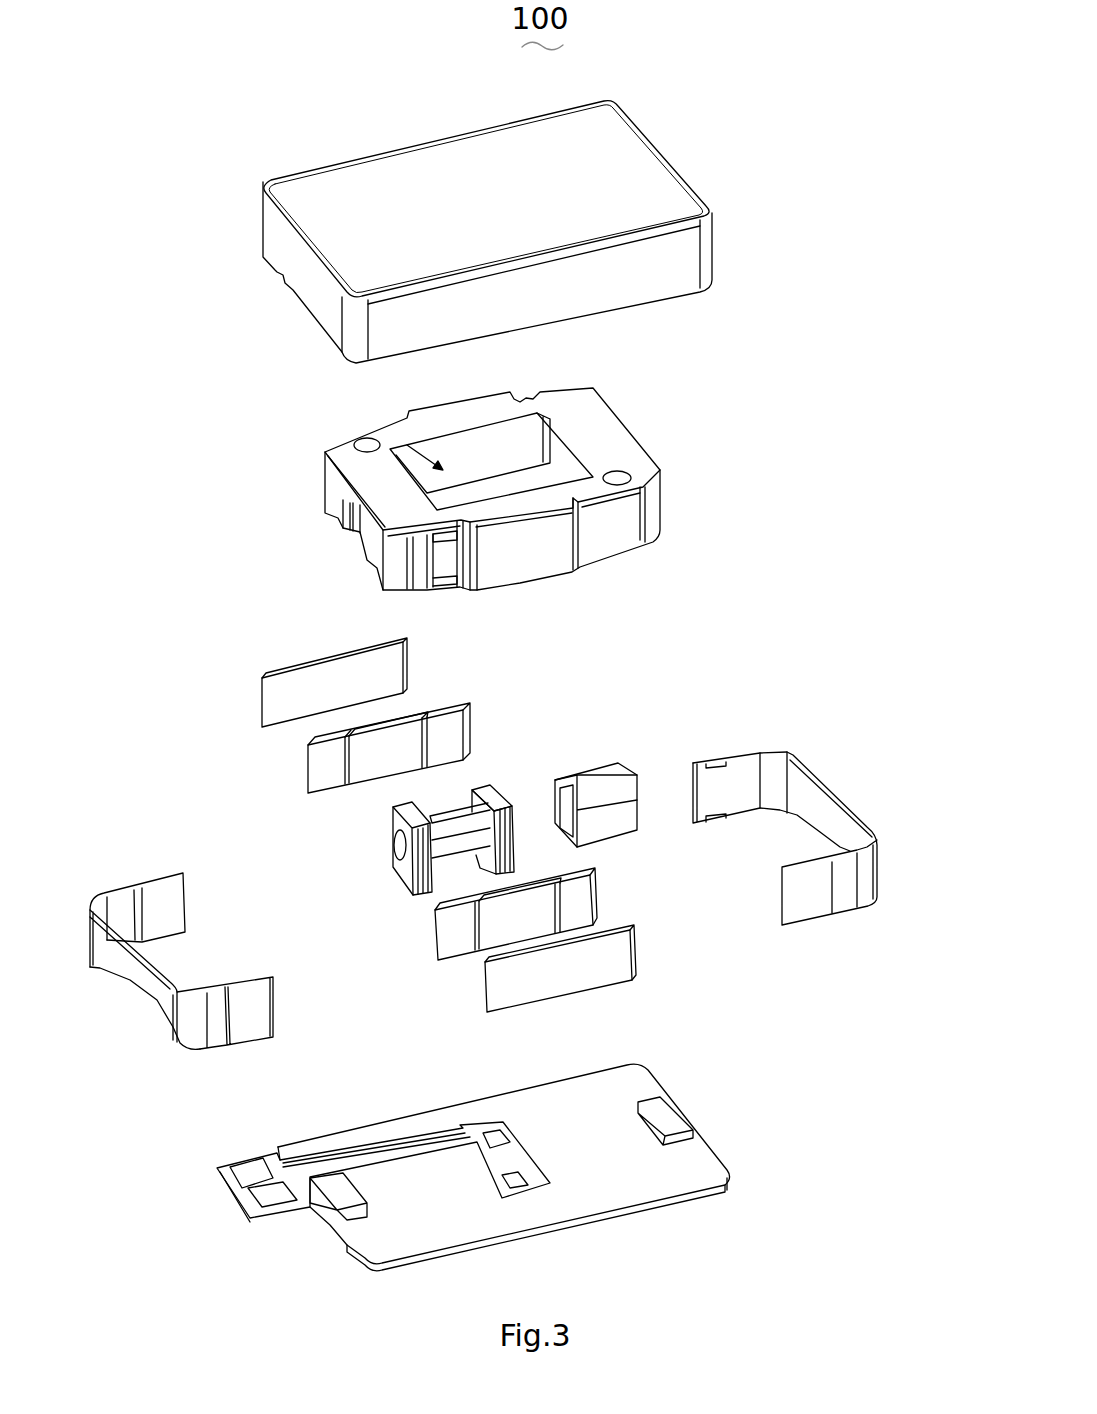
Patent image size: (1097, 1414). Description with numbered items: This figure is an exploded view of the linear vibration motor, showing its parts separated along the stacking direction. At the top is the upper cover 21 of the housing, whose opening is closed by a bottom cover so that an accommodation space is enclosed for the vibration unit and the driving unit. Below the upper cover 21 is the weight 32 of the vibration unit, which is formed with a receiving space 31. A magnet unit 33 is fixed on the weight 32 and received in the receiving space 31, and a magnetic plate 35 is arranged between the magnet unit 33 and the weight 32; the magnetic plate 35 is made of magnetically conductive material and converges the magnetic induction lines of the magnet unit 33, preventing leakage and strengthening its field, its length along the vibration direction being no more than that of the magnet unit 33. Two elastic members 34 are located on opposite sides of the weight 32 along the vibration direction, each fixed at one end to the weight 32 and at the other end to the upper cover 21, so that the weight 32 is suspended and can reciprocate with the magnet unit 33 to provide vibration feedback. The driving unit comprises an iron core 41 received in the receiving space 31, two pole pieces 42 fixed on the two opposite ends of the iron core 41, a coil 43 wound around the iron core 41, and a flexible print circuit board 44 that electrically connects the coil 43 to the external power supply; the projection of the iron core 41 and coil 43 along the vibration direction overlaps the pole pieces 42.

The upper cover 21 is at (628, 167).
The receiving space 31 is at (390, 435).
The weight 32 is at (613, 445).
The magnet unit 33 is at (322, 783).
The elastic member 34 is at (798, 800).
The magnetic plate 35 is at (335, 672).
The iron core 41 is at (443, 818).
The pole piece 42 is at (398, 827).
The coil 43 is at (590, 790).
The flexible print circuit board 44 is at (537, 1183).